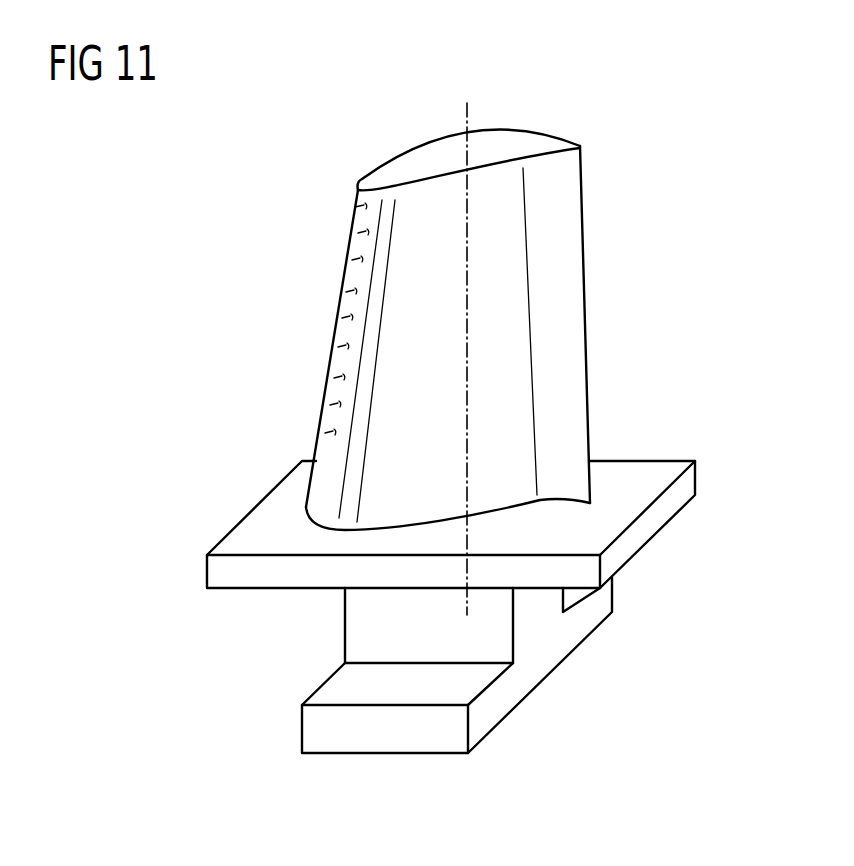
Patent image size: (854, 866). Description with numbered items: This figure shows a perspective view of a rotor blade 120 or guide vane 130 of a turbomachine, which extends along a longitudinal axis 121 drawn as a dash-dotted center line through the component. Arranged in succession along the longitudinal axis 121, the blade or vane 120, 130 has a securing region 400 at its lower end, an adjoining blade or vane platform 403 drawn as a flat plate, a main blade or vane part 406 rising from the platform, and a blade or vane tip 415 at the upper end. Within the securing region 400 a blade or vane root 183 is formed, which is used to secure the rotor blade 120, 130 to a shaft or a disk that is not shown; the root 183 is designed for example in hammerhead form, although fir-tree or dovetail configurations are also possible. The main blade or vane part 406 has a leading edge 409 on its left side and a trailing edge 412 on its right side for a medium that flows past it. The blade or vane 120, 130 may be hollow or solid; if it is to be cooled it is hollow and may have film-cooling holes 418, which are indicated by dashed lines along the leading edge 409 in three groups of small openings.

The longitudinal axis 121 is at (462, 125).
The rotor blade 120 is at (385, 321).
The guide vane 130 is at (385, 321).
The blade or vane tip 415 is at (372, 178).
The leading edge 409 is at (331, 264).
The trailing edge 412 is at (607, 283).
The film-cooling holes 418 is at (352, 260).
The main blade or vane part 406 is at (320, 487).
The blade or vane platform 403 is at (657, 517).
The securing region 400 is at (535, 677).
The blade or vane root 183 is at (332, 692).